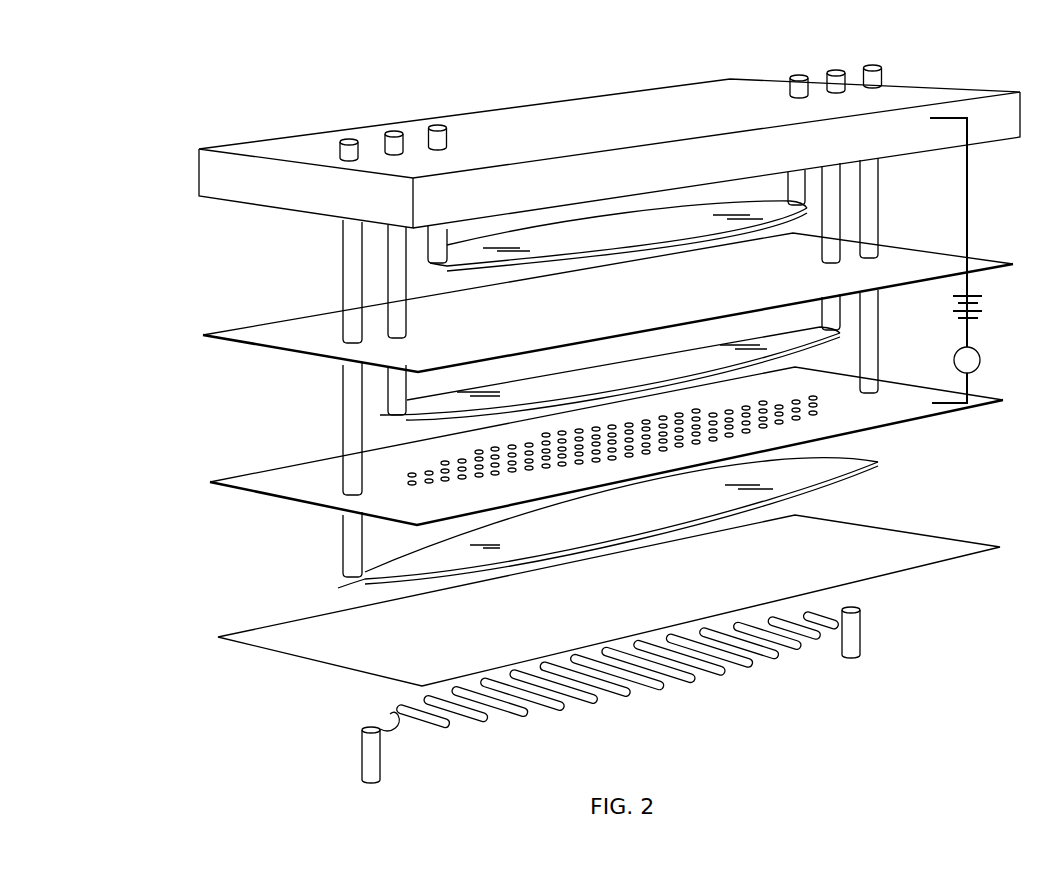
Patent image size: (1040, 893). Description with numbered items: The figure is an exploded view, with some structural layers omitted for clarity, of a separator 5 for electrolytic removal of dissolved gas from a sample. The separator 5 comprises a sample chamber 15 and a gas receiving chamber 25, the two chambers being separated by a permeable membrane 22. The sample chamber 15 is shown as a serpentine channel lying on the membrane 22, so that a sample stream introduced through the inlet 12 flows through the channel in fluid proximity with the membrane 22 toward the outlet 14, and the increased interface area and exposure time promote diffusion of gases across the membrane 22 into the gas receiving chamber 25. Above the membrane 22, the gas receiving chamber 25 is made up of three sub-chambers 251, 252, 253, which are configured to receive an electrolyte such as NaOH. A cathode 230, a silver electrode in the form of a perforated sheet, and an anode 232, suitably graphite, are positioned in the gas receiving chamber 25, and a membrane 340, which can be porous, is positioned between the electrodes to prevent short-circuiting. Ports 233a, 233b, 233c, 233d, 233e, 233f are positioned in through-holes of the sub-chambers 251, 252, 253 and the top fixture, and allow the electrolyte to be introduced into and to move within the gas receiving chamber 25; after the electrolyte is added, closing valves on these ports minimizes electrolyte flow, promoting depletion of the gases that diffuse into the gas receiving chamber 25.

The separator 5 is at (122, 188).
The inlet 12 is at (370, 755).
The outlet 14 is at (853, 636).
The sample chamber 15 is at (683, 675).
The membrane 22 is at (328, 647).
The gas receiving chamber 25 is at (166, 238).
The cathode 230 is at (305, 488).
The anode 232 is at (942, 95).
The port 233a is at (350, 141).
The port 233b is at (394, 133).
The port 233c is at (437, 127).
The port 233d is at (796, 77).
The port 233e is at (836, 72).
The port 233f is at (873, 67).
The sub-chamber 251 is at (397, 557).
The sub-chamber 252 is at (430, 397).
The sub-chamber 253 is at (602, 232).
The membrane 340 is at (282, 332).